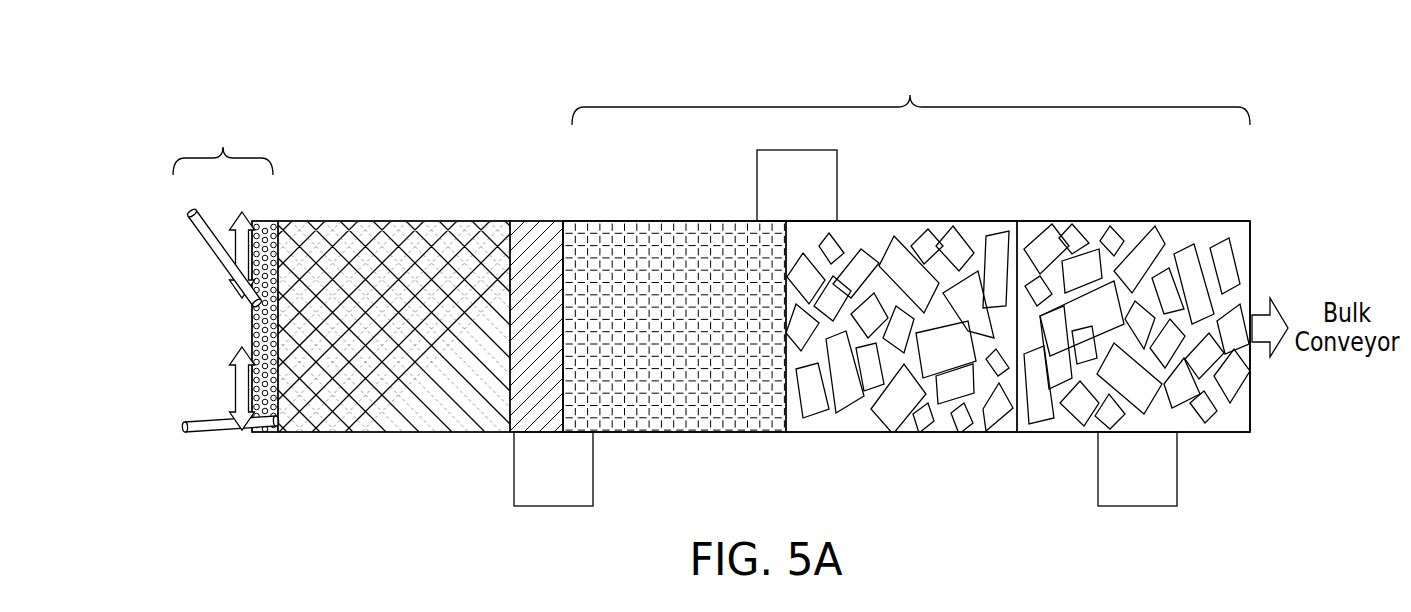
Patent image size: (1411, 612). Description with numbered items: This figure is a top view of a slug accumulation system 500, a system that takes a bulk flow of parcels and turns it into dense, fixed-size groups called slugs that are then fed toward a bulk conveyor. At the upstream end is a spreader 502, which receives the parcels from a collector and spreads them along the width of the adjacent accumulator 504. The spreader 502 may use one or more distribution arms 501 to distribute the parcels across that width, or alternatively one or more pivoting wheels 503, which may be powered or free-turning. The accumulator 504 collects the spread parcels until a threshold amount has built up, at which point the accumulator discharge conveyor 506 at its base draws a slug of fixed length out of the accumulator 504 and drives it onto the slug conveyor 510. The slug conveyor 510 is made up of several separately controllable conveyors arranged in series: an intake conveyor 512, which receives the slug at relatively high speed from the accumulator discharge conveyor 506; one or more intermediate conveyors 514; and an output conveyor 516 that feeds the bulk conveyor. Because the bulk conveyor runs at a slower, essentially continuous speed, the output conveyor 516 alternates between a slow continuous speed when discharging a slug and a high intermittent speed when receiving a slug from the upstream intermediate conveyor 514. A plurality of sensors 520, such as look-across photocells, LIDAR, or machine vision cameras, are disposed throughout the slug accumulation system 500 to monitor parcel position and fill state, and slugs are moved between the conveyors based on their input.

The slug accumulation system 500 is at (155, 108).
The distribution arms 501 is at (180, 247).
The spreader 502 is at (223, 143).
The pivoting wheels 503 is at (232, 333).
The accumulator 504 is at (360, 200).
The accumulator discharge conveyor 506 is at (519, 193).
The slug conveyor 510 is at (906, 247).
The intake conveyor 512 is at (667, 197).
The intermediate conveyor 514 is at (933, 198).
The output conveyor 516 is at (1130, 198).
The sensors 520 is at (776, 200).